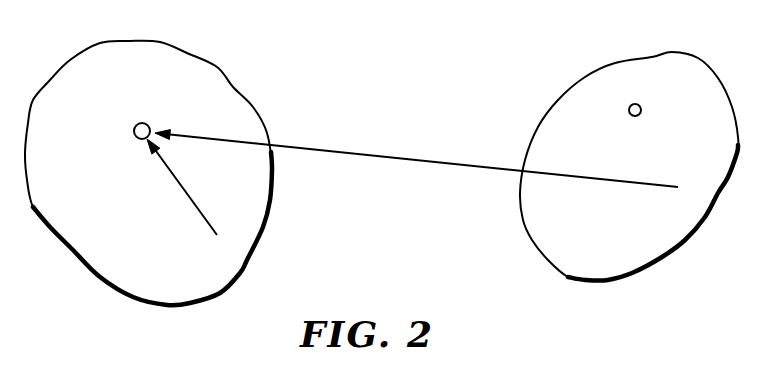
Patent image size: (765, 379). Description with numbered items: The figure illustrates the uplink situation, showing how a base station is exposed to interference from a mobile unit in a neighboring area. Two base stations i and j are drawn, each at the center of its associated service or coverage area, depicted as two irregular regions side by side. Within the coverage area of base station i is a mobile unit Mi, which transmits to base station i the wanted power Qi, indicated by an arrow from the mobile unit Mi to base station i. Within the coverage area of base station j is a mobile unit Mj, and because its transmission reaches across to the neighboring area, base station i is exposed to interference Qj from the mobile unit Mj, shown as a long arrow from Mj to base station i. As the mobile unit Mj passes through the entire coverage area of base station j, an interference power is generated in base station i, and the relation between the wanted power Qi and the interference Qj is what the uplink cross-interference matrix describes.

The base station i is at (136, 124).
The base station j is at (644, 116).
The wanted power Qi is at (174, 187).
The interference Qj is at (416, 152).
The mobile unit Mi is at (207, 250).
The mobile unit Mj is at (673, 198).